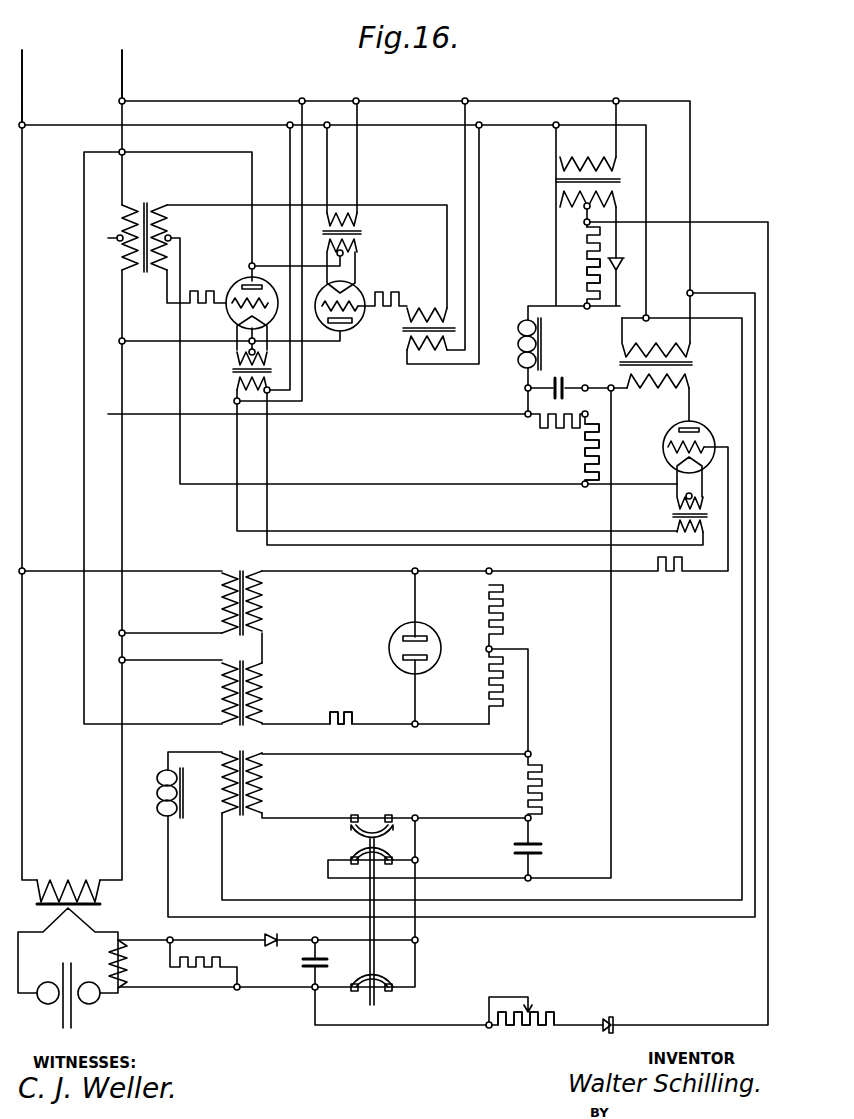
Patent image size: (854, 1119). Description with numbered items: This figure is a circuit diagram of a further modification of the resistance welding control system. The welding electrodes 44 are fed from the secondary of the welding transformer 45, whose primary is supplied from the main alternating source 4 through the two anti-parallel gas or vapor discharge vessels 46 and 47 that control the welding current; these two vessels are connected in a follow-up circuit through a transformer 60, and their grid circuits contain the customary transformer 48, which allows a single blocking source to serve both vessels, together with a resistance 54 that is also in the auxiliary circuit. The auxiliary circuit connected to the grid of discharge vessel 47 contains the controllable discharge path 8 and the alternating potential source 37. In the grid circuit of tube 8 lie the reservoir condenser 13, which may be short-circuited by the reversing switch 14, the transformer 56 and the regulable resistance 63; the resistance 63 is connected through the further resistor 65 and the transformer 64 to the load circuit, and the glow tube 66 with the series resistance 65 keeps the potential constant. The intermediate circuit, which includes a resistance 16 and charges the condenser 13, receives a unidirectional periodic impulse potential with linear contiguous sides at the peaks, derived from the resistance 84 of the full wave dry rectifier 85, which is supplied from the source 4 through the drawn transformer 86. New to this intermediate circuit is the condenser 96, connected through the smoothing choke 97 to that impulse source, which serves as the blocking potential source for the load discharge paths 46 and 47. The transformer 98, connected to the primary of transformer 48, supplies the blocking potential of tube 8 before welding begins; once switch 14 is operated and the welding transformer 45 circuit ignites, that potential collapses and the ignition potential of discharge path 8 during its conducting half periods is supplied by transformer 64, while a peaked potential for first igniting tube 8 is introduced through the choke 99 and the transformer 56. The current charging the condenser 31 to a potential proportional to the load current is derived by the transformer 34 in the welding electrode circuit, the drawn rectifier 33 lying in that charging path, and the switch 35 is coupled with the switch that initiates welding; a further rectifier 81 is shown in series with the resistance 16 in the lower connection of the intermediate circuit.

The alternating source 4 is at (156, 48).
The transformer 48 is at (147, 205).
The gas or vapor discharge vessel 46 is at (244, 281).
The gas or vapor discharge vessel 47 is at (360, 318).
The transformer 60 is at (407, 336).
The transformer 86 is at (576, 180).
The resistance 84 is at (586, 250).
The full wave dry rectifier 85 is at (584, 266).
The smoothing choke 97 is at (518, 352).
The condenser 96 is at (559, 378).
The alternating potential source 37 is at (692, 364).
The discharge path 8 is at (705, 437).
The resistance 54 is at (582, 452).
The transformer 64 is at (244, 571).
The transformer 98 is at (246, 662).
The transformer 56 is at (246, 756).
The choke 99 is at (158, 786).
The glow tube 66 is at (428, 636).
The regulable resistance 63 is at (489, 686).
The series resistance 65 is at (350, 713).
The switch 14 is at (372, 828).
The reservoir condenser 13 is at (541, 844).
The welding transformer 45 is at (100, 906).
The transformer 34 is at (112, 960).
The welding electrodes 44 is at (76, 1020).
The rectifier 33 is at (266, 940).
The condenser 31 is at (302, 962).
The switch 35 is at (376, 980).
The resistance 16 is at (540, 1012).
The rectifier 81 is at (613, 1020).